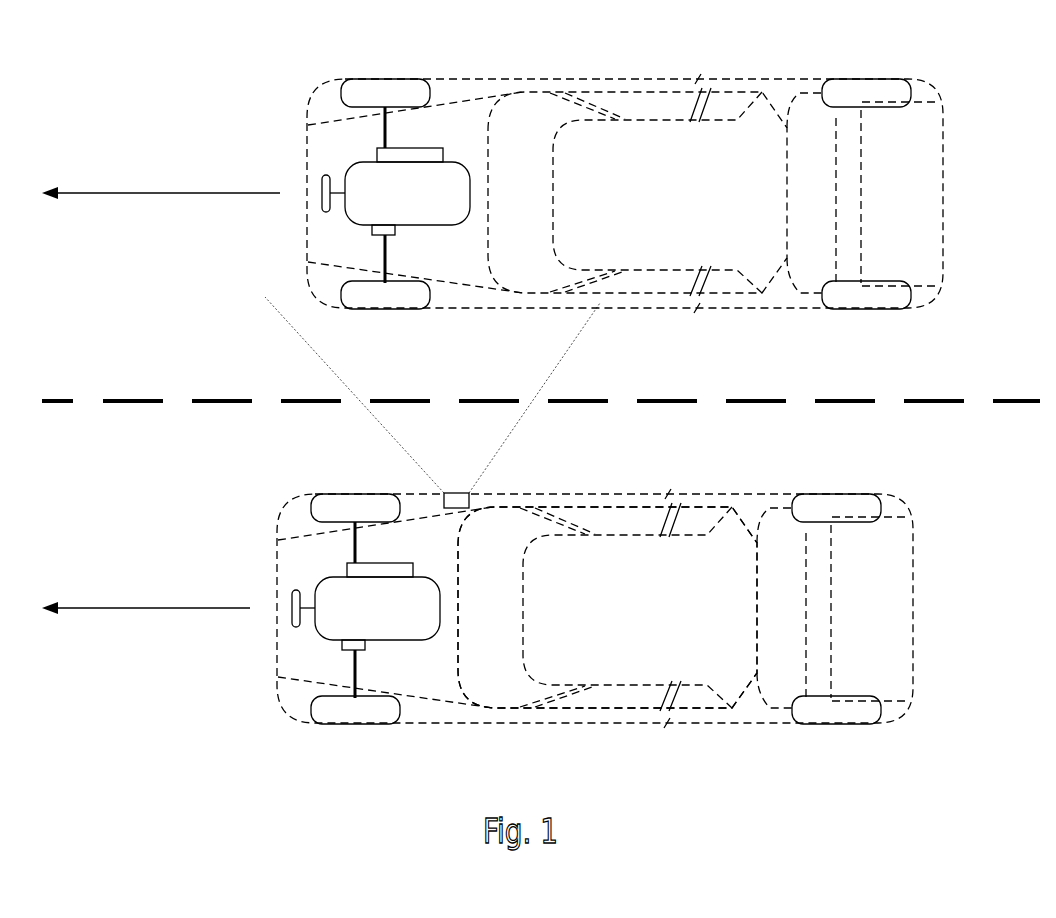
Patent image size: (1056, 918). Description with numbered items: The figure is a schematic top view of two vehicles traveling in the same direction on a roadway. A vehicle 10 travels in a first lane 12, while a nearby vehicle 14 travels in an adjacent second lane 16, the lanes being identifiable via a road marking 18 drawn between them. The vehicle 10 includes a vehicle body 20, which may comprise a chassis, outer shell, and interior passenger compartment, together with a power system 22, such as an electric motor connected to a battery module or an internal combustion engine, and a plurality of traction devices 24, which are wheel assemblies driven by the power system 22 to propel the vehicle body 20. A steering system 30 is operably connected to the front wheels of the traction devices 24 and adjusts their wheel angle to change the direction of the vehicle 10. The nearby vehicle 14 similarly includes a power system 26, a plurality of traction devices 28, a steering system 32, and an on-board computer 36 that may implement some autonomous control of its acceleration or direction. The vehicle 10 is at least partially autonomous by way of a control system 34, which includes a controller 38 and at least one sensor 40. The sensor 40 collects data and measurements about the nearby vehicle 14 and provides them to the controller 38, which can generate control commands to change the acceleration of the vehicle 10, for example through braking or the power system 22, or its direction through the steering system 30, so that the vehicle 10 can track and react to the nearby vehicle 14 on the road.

The vehicle 10 is at (662, 716).
The first lane 12 is at (128, 530).
The nearby vehicle 14 is at (787, 275).
The second lane 16 is at (128, 311).
The road marking 18 is at (1016, 396).
The vehicle body 20 is at (723, 663).
The power system 22 is at (413, 622).
The traction devices 24 is at (356, 507).
The power system 26 is at (443, 207).
The traction devices 28 is at (387, 92).
The steering system 30 is at (344, 646).
The steering system 32 is at (374, 231).
The control system 34 is at (502, 476).
The on-board computer 36 is at (425, 150).
The controller 38 is at (403, 562).
The sensor 40 is at (470, 508).